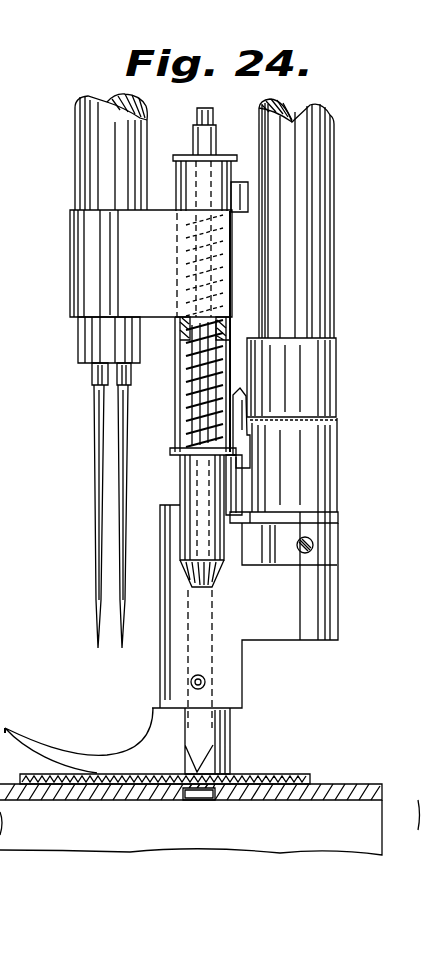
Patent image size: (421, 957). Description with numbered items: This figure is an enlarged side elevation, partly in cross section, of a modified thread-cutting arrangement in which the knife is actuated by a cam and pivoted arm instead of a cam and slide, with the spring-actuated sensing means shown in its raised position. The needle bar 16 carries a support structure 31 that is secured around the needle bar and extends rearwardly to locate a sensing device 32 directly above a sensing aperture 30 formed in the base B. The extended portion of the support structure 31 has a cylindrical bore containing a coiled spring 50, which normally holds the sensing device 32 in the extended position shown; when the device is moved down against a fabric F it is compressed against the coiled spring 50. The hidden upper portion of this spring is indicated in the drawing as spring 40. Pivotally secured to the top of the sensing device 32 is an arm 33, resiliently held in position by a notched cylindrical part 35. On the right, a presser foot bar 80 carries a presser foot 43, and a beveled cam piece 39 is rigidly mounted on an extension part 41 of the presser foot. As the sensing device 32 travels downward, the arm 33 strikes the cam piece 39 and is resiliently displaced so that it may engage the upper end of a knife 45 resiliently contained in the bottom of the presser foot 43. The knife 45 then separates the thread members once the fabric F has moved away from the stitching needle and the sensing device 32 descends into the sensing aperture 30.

The needle bar 16 is at (82, 152).
The support structure 31 is at (118, 275).
The notched cylindrical part 35 is at (177, 177).
The arm 33 is at (247, 175).
The spring (hidden portion) 40 is at (175, 256).
The coiled spring 50 is at (200, 377).
The beveled cam piece 39 is at (240, 400).
The sensing device 32 is at (212, 548).
The presser foot bar 80 is at (308, 257).
The extension part 41 is at (177, 617).
The presser foot 43 is at (118, 765).
The knife 45 is at (197, 740).
The fabric F is at (280, 757).
The base B is at (347, 783).
The sensing aperture 30 is at (188, 800).